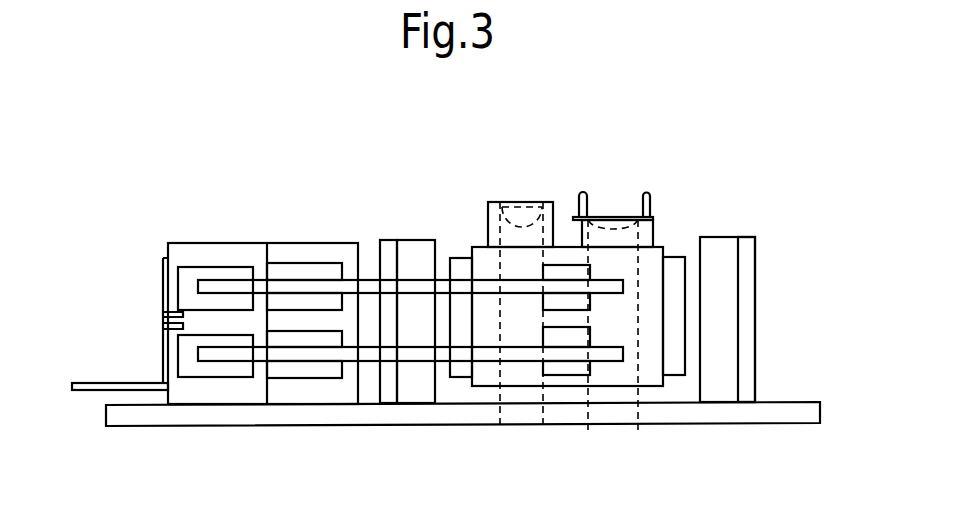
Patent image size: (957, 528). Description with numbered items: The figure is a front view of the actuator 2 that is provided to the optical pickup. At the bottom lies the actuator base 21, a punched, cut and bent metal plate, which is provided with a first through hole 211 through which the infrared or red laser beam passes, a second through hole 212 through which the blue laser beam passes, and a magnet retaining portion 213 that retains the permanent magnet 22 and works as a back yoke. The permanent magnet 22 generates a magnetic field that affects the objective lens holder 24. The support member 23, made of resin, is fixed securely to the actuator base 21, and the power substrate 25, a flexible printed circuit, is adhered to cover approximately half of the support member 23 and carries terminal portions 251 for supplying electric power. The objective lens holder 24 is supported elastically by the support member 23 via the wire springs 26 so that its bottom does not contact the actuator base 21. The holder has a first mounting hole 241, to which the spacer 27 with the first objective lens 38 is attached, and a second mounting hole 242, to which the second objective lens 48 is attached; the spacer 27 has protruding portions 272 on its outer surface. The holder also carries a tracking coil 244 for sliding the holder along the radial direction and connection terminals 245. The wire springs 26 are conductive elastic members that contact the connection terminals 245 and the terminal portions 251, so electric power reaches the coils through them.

The actuator 2 is at (103, 197).
The actuator base 21 is at (187, 410).
The permanent magnet 22 is at (407, 247).
The support member 23 is at (221, 274).
The objective lens holder 24 is at (608, 323).
The power substrate 25 is at (102, 388).
The wire springs 26 is at (413, 353).
The spacer 27 is at (598, 253).
The first objective lens 38 is at (628, 218).
The second objective lens 48 is at (525, 204).
The first through hole 211 is at (602, 412).
The second through hole 212 is at (509, 414).
The magnet retaining portion 213 is at (392, 383).
The first mounting hole 241 is at (643, 272).
The second mounting hole 242 is at (488, 200).
The tracking coil 244 is at (462, 330).
The connection terminals 245 is at (575, 300).
The terminal portions 251 is at (225, 338).
The protruding portions 272 is at (582, 193).